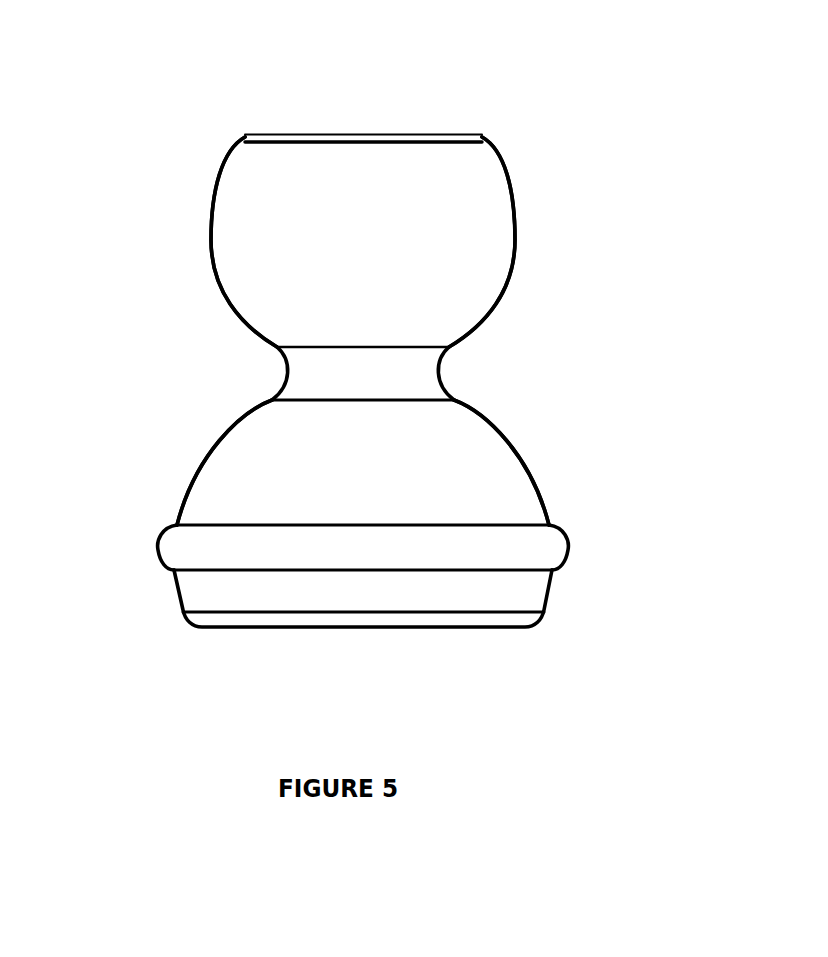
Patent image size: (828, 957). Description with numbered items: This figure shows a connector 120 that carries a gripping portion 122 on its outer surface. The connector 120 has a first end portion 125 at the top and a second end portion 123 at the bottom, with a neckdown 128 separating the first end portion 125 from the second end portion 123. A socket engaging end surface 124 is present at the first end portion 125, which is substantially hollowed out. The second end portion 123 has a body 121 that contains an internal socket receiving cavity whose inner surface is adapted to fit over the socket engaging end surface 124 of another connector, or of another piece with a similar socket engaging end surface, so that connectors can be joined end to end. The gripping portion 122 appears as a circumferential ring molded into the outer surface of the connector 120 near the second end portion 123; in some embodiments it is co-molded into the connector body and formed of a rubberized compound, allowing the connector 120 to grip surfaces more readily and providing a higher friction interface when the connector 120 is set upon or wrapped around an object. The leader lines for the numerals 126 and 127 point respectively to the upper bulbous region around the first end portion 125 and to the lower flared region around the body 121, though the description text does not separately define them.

The connector 120 is at (626, 164).
The body 121 is at (503, 433).
The gripping portion 122 is at (565, 535).
The second end portion 123 is at (530, 628).
The socket engaging end surface 124 is at (216, 186).
The first end portion 125 is at (482, 134).
The upper portion 126 is at (199, 253).
The lower portion 127 is at (181, 472).
The neckdown 128 is at (442, 375).